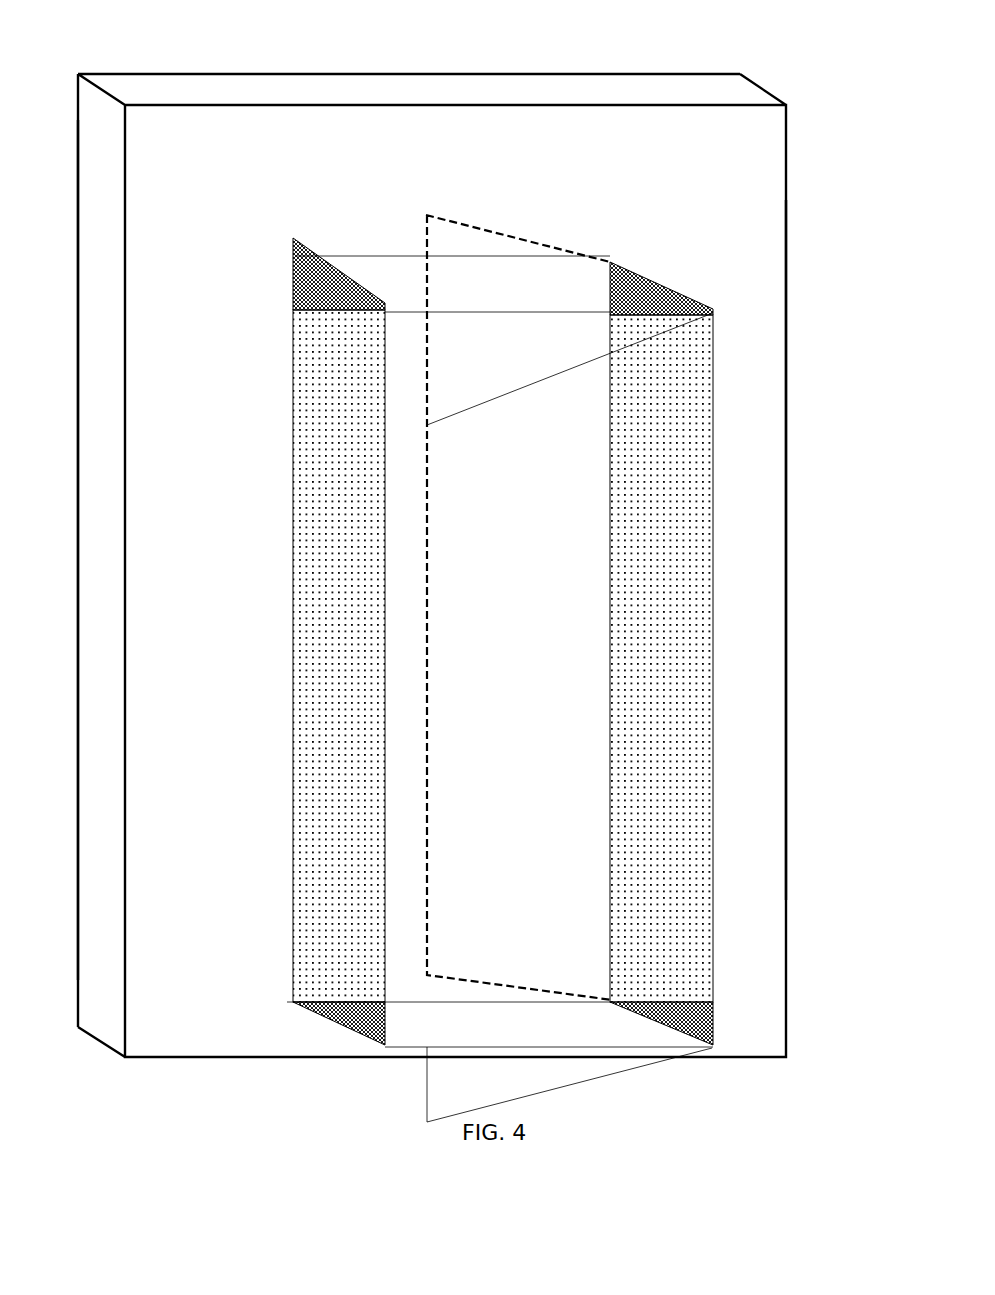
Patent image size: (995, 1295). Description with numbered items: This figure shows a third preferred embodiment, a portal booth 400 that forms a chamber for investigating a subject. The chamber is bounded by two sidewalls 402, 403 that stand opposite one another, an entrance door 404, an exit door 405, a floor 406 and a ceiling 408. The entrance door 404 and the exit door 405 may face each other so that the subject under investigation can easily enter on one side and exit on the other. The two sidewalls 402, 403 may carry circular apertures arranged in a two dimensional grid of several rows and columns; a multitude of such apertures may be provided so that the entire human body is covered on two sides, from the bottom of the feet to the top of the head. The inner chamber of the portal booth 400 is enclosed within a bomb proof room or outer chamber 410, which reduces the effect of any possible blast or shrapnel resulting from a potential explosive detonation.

The portal booth 400 is at (352, 63).
The sidewall 402 is at (337, 602).
The sidewall 403 is at (662, 652).
The entrance door 404 is at (459, 225).
The exit door 405 is at (632, 1078).
The floor 406 is at (413, 1047).
The ceiling 408 is at (583, 298).
The outer chamber 410 is at (193, 447).